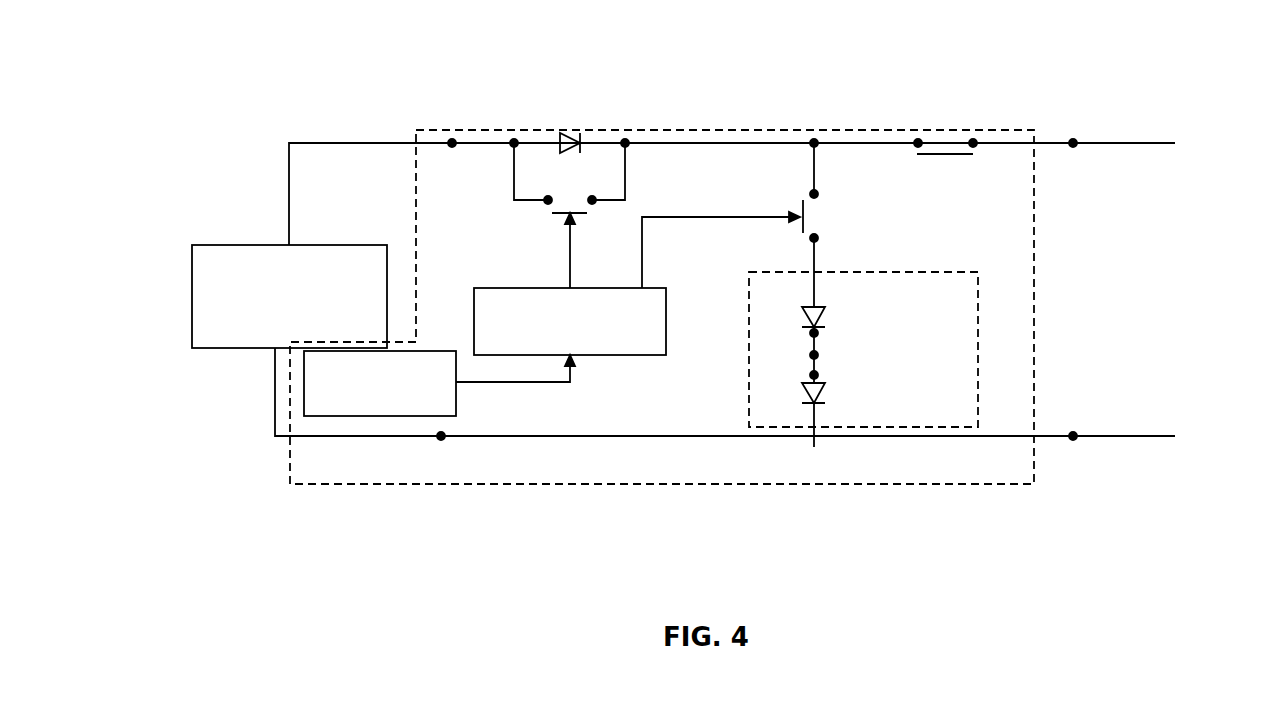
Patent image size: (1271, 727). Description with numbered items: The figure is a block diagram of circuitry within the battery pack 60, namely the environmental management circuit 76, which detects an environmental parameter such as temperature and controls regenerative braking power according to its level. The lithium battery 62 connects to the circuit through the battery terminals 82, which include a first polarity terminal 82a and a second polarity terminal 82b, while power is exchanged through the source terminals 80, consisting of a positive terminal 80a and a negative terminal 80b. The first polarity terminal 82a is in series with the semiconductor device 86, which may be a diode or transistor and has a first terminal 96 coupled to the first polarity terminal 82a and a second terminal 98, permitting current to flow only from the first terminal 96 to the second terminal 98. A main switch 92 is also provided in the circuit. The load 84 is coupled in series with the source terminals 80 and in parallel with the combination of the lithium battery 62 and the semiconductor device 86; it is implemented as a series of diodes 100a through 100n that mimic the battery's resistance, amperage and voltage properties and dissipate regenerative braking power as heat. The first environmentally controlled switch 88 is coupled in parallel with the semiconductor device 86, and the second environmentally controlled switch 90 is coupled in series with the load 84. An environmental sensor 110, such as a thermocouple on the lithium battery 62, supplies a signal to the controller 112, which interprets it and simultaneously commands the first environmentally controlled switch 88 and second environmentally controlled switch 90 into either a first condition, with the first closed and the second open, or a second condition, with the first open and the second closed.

The battery pack 60 is at (499, 73).
The lithium battery 62 is at (225, 244).
The environmental management circuit 76 is at (915, 140).
The source terminals 80 is at (1149, 73).
The positive terminal 80a is at (1052, 142).
The negative terminal 80b is at (1050, 436).
The battery terminals 82 is at (280, 113).
The first polarity terminal 82a is at (473, 142).
The second polarity terminal 82b is at (478, 440).
The load 84 is at (927, 270).
The semiconductor device 86 is at (568, 134).
The first environmentally controlled switch 88 is at (627, 183).
The second environmentally controlled switch 90 is at (816, 236).
The main switch 92 is at (972, 142).
The first terminal 96 is at (501, 142).
The second terminal 98 is at (712, 142).
The diode 100a is at (812, 307).
The diode 100n is at (815, 383).
The environmental sensor 110 is at (335, 418).
The controller 112 is at (508, 287).